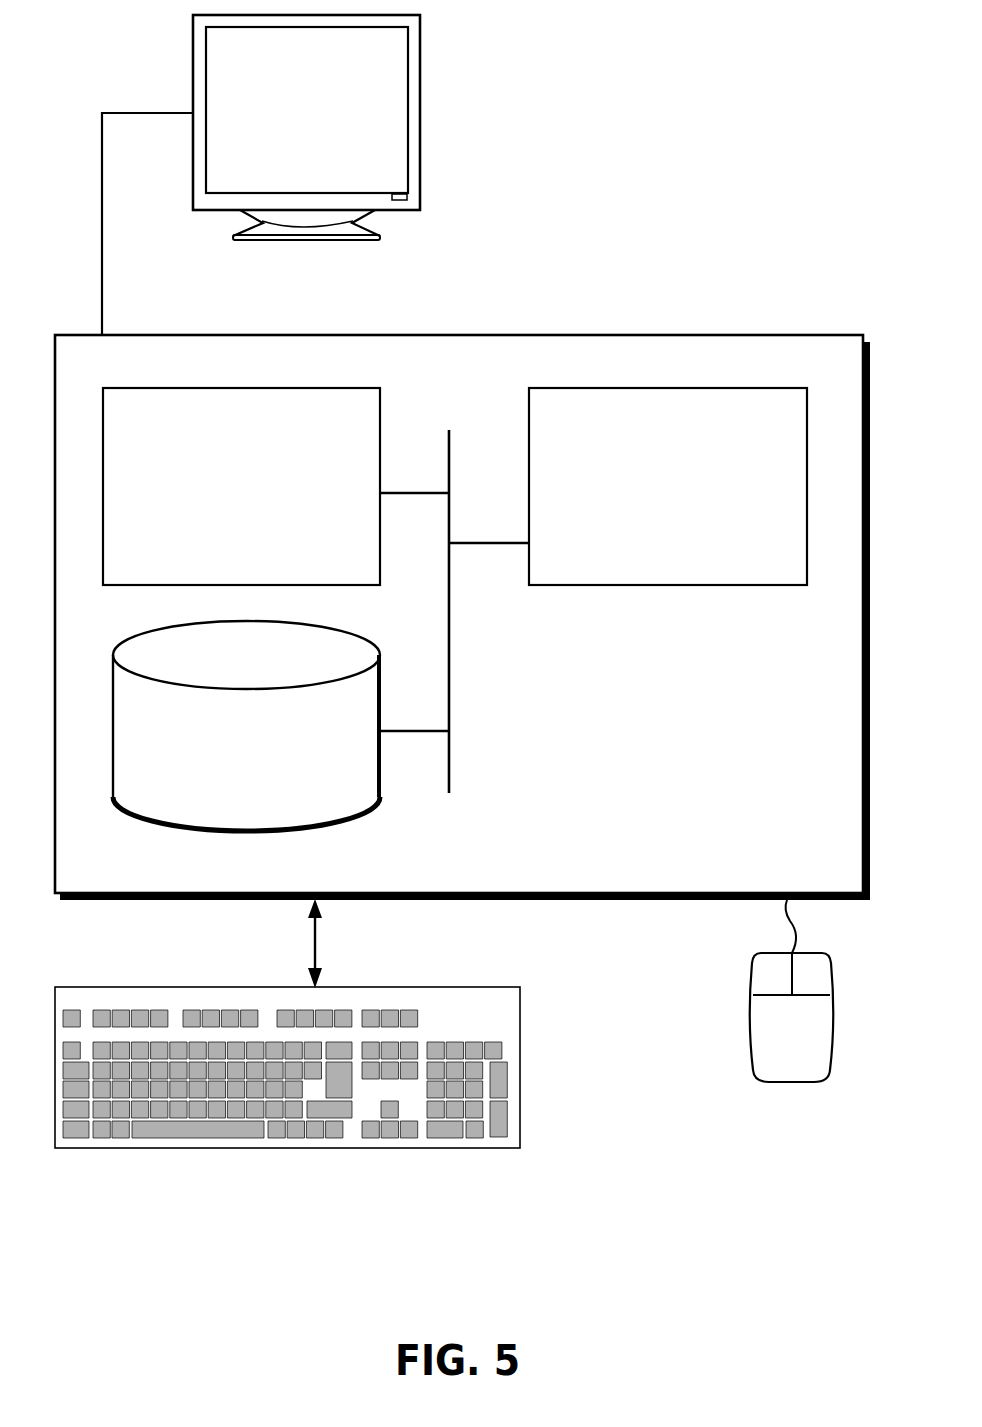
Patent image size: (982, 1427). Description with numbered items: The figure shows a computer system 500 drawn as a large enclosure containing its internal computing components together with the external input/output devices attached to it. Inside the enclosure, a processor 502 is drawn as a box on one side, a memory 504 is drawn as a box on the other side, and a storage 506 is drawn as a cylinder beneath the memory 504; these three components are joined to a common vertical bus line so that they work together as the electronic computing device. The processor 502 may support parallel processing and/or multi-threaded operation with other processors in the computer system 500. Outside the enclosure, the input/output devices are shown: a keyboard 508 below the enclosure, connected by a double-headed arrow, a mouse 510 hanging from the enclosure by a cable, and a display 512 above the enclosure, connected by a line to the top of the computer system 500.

The computer system 500 is at (517, 297).
The processor 502 is at (698, 502).
The memory 504 is at (268, 501).
The storage 506 is at (275, 759).
The keyboard 508 is at (287, 1043).
The mouse 510 is at (817, 1045).
The display 512 is at (261, 175).